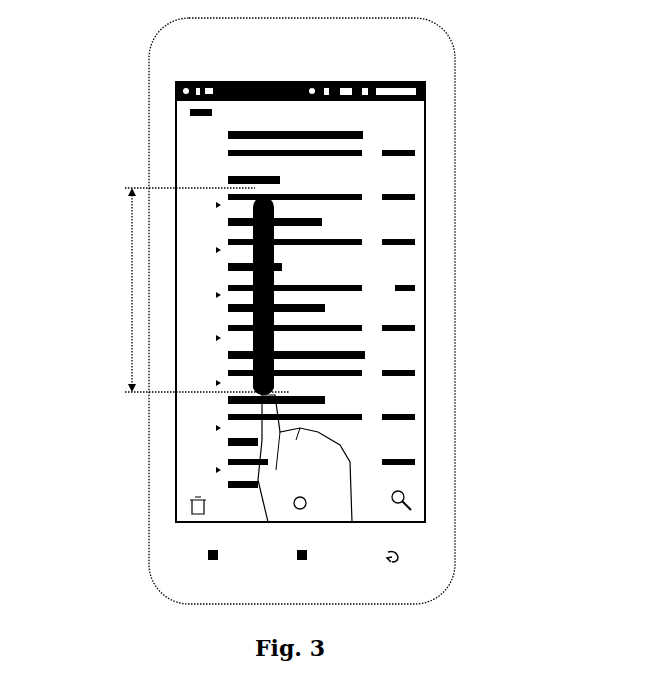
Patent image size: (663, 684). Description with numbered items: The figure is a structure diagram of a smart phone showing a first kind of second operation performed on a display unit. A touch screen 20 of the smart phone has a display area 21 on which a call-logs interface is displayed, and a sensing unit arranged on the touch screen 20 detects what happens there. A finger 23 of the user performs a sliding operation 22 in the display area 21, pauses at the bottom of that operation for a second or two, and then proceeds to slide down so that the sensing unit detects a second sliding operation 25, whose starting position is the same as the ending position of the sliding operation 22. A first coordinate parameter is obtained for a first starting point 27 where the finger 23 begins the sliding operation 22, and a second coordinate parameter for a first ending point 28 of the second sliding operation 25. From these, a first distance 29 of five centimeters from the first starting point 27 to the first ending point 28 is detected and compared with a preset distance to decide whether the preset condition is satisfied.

The touch screen 20 is at (420, 257).
The display area 21 is at (236, 136).
The sliding operation 22 is at (272, 204).
The finger 23 is at (333, 490).
The second sliding operation 25 is at (283, 368).
The first starting point 27 is at (227, 178).
The first ending point 28 is at (235, 399).
The first distance 29 is at (118, 275).